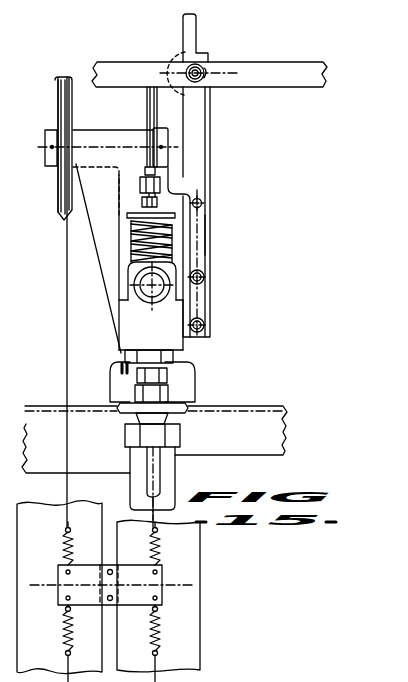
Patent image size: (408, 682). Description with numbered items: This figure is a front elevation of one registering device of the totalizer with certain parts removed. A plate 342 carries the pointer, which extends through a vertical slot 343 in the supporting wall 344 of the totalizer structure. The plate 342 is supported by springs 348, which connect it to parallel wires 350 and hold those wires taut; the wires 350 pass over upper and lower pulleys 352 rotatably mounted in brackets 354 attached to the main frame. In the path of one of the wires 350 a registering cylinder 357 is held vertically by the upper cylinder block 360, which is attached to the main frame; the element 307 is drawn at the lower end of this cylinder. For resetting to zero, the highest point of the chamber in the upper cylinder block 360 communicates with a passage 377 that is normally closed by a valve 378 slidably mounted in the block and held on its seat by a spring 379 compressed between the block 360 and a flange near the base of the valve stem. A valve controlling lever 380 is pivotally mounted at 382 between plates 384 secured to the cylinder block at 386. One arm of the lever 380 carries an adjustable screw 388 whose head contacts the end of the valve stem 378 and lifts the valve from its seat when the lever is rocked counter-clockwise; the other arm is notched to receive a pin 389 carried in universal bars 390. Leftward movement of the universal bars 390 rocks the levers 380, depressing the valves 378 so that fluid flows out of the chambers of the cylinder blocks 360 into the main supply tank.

The tube 307 is at (158, 453).
The plate 342 is at (162, 578).
The vertical slot 343 is at (113, 646).
The supporting wall 344 is at (200, 578).
The springs 348 is at (62, 622).
The parallel wires 350 is at (157, 107).
The pulleys 352 is at (55, 91).
The brackets 354 is at (86, 136).
The registering cylinder 357 is at (133, 448).
The upper cylinder block 360 is at (127, 331).
The passage 377 is at (148, 283).
The valve 378 is at (133, 230).
The spring 379 is at (128, 216).
The valve controlling lever 380 is at (209, 112).
The pivot 382 is at (203, 206).
The plates 384 is at (206, 236).
The securing points 386 is at (205, 320).
The adjustable screw 388 is at (143, 203).
The pin 389 is at (203, 66).
The universal bars 390 is at (276, 63).